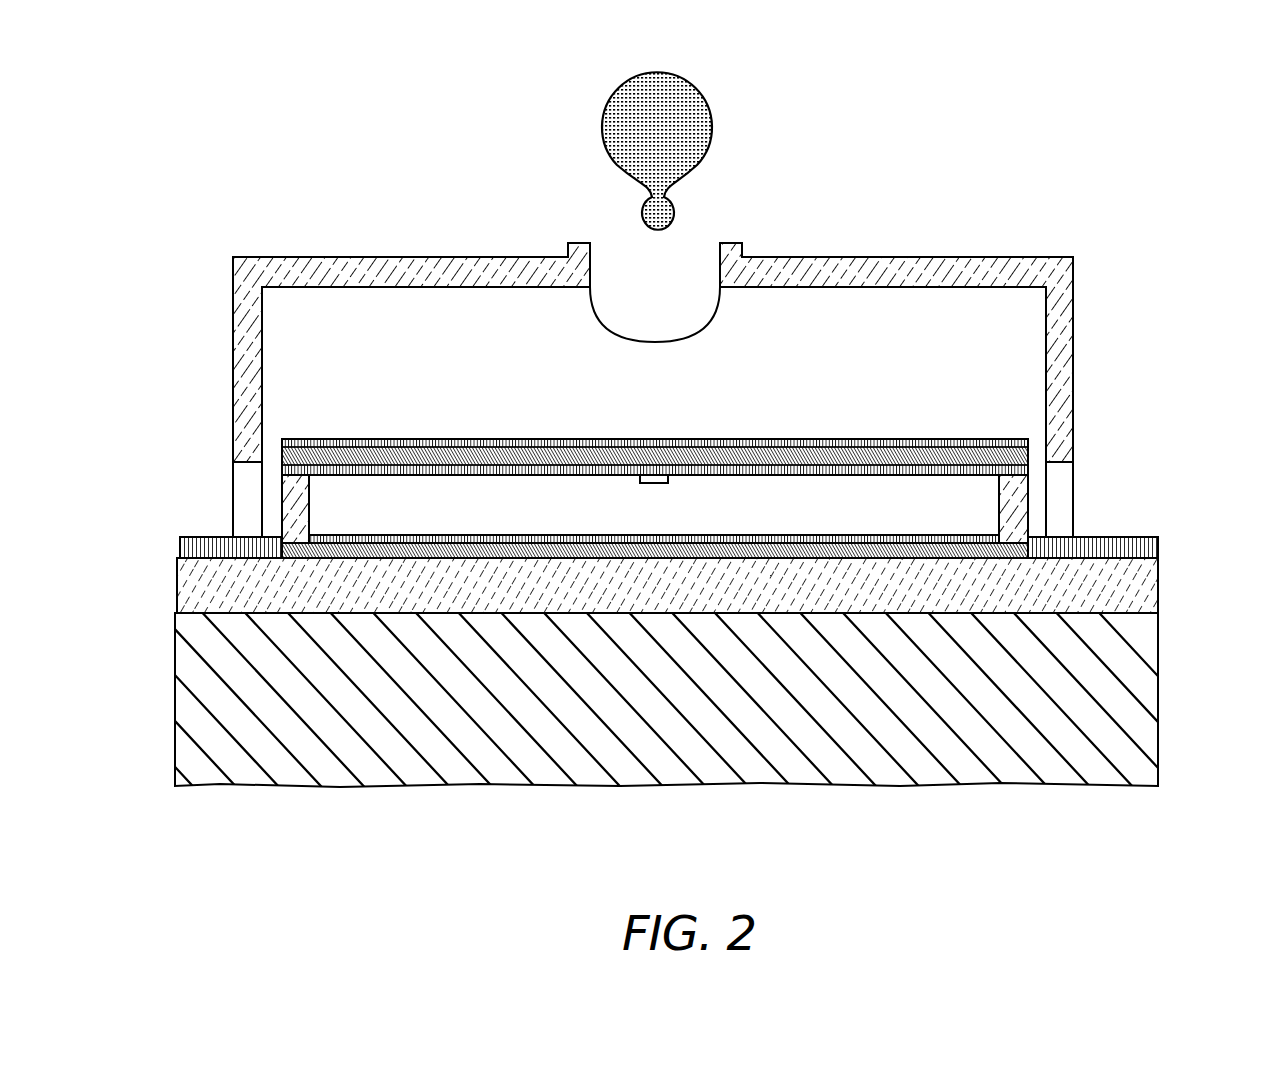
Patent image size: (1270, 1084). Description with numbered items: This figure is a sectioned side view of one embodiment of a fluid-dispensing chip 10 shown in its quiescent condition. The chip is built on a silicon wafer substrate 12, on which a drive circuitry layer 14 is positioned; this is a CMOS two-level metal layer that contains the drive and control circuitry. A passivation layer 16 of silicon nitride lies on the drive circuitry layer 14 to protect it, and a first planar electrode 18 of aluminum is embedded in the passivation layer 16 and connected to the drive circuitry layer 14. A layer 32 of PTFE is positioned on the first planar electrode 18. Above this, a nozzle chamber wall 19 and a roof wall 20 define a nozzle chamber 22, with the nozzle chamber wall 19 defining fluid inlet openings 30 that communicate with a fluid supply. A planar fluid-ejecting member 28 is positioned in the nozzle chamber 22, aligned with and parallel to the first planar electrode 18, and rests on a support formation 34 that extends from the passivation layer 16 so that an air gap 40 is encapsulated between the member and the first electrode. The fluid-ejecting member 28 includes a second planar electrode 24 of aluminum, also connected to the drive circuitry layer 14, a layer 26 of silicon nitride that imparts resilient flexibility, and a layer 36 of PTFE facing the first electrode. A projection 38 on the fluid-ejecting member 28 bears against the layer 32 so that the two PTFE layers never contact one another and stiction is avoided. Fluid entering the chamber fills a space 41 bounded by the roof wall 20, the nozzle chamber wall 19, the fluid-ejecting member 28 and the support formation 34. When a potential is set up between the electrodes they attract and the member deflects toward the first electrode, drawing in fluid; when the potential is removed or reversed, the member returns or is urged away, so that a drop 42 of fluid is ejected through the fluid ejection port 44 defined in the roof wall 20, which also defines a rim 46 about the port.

The fluid-dispensing chip 10 is at (698, 318).
The silicon wafer substrate 12 is at (1158, 660).
The drive circuitry layer 14 is at (1158, 583).
The passivation layer 16 is at (1158, 537).
The first planar electrode 18 is at (978, 557).
The nozzle chamber wall 19 is at (1073, 383).
The roof wall 20 is at (1006, 257).
The nozzle chamber 22 is at (834, 317).
The second planar electrode 24 is at (655, 419).
The layer of silicon nitride 26 is at (420, 440).
The fluid-ejecting member 28 is at (847, 440).
The fluid inlet openings 30 is at (1108, 478).
The layer of PTFE 32 is at (880, 535).
The support formation 34 is at (282, 497).
The layer of PTFE 36 is at (487, 465).
The projection 38 is at (668, 483).
The air gap 40 is at (372, 500).
The space 41 is at (988, 337).
The drop of fluid 42 is at (710, 100).
The fluid ejection port 44 is at (606, 228).
The rim 46 is at (742, 243).